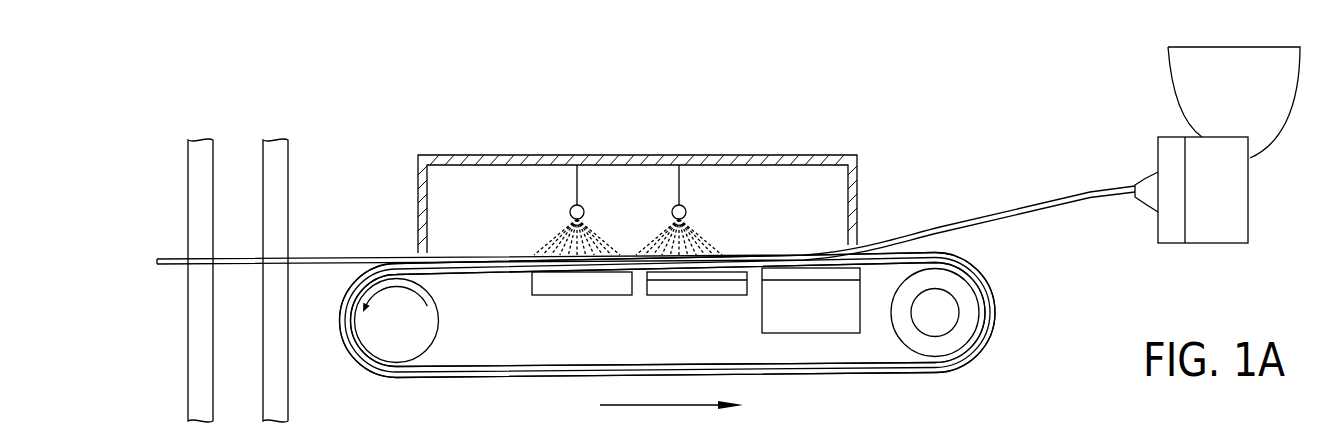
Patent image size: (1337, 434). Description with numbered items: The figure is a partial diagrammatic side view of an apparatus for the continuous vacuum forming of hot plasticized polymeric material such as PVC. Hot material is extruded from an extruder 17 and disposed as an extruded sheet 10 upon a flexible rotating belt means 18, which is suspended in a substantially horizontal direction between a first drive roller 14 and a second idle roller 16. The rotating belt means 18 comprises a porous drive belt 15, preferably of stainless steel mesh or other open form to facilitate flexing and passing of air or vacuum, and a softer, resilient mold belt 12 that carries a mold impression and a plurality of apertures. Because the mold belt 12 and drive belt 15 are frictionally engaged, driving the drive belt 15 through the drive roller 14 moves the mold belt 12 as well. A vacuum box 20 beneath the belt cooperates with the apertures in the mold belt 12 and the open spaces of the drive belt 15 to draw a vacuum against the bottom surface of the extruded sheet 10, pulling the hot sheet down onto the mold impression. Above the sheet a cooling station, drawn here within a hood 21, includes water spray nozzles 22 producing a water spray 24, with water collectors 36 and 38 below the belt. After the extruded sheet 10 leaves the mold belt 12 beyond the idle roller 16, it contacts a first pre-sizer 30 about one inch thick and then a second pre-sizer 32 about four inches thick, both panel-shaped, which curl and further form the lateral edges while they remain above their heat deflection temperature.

The extruded sheet 10 is at (472, 258).
The mold belt 12 is at (982, 267).
The first drive roller 14 is at (970, 323).
The porous drive belt 15 is at (653, 363).
The second idle roller 16 is at (412, 337).
The extruder 17 is at (1249, 98).
The rotating belt means 18 is at (477, 377).
The vacuum box 20 is at (829, 317).
The hood 21 is at (795, 155).
The water spray nozzles 22 is at (675, 207).
The water spray 24 is at (553, 238).
The first pre-sizer 30 is at (288, 158).
The second pre-sizer 32 is at (188, 169).
The water collector 36 is at (573, 297).
The water collector 38 is at (667, 296).